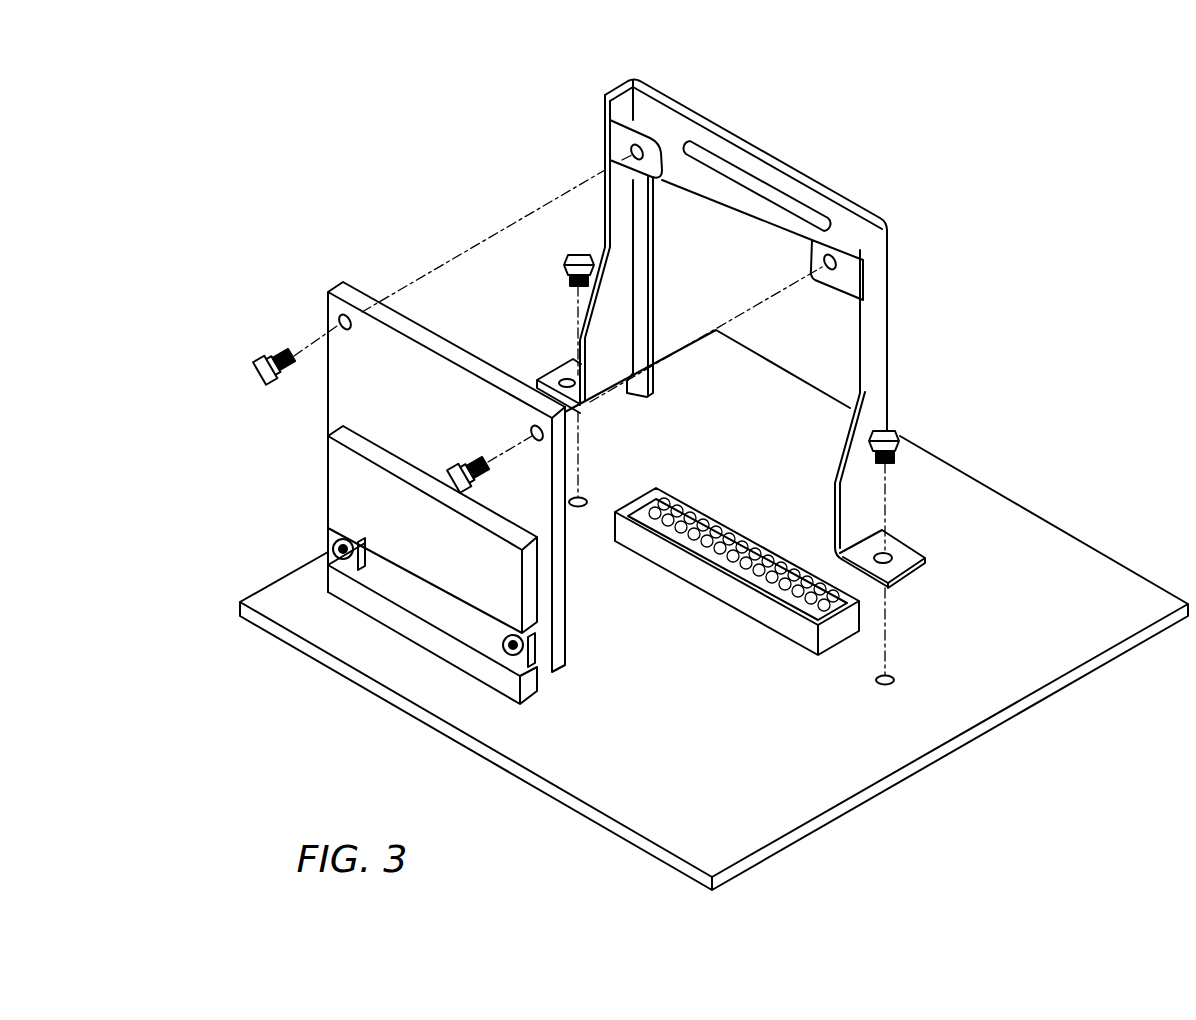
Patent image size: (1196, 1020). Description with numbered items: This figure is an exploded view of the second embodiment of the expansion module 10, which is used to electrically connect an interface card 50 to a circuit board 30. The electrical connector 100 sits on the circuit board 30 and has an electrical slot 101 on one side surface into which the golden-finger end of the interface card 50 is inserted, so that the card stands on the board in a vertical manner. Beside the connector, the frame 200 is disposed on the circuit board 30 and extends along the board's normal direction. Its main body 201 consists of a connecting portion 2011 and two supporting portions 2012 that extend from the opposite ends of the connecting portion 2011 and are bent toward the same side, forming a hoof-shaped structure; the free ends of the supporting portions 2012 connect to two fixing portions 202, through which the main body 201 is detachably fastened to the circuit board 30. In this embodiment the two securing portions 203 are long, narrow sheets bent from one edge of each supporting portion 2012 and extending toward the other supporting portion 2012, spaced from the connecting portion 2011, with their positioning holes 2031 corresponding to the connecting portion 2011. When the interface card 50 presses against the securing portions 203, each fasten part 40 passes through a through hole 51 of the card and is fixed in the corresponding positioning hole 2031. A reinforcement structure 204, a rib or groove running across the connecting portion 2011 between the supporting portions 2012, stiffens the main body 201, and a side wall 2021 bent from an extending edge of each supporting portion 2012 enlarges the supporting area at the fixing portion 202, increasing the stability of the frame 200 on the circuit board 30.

The expansion module 10 is at (179, 80).
The circuit board 30 is at (1128, 588).
The fasten part 40 is at (570, 250).
The interface card 50 is at (406, 493).
The through hole 51 is at (337, 320).
The electrical connector 100 is at (807, 666).
The electrical slot 101 is at (806, 620).
The frame 200 is at (696, 329).
The main body 201 is at (912, 210).
The connecting portion 2011 is at (746, 155).
The supporting portion 2012 is at (620, 190).
The fixing portion 202 is at (487, 316).
The side wall 2021 is at (605, 332).
The securing portion 203 is at (585, 131).
The positioning hole 2031 is at (630, 152).
The reinforcement structure 204 is at (743, 178).